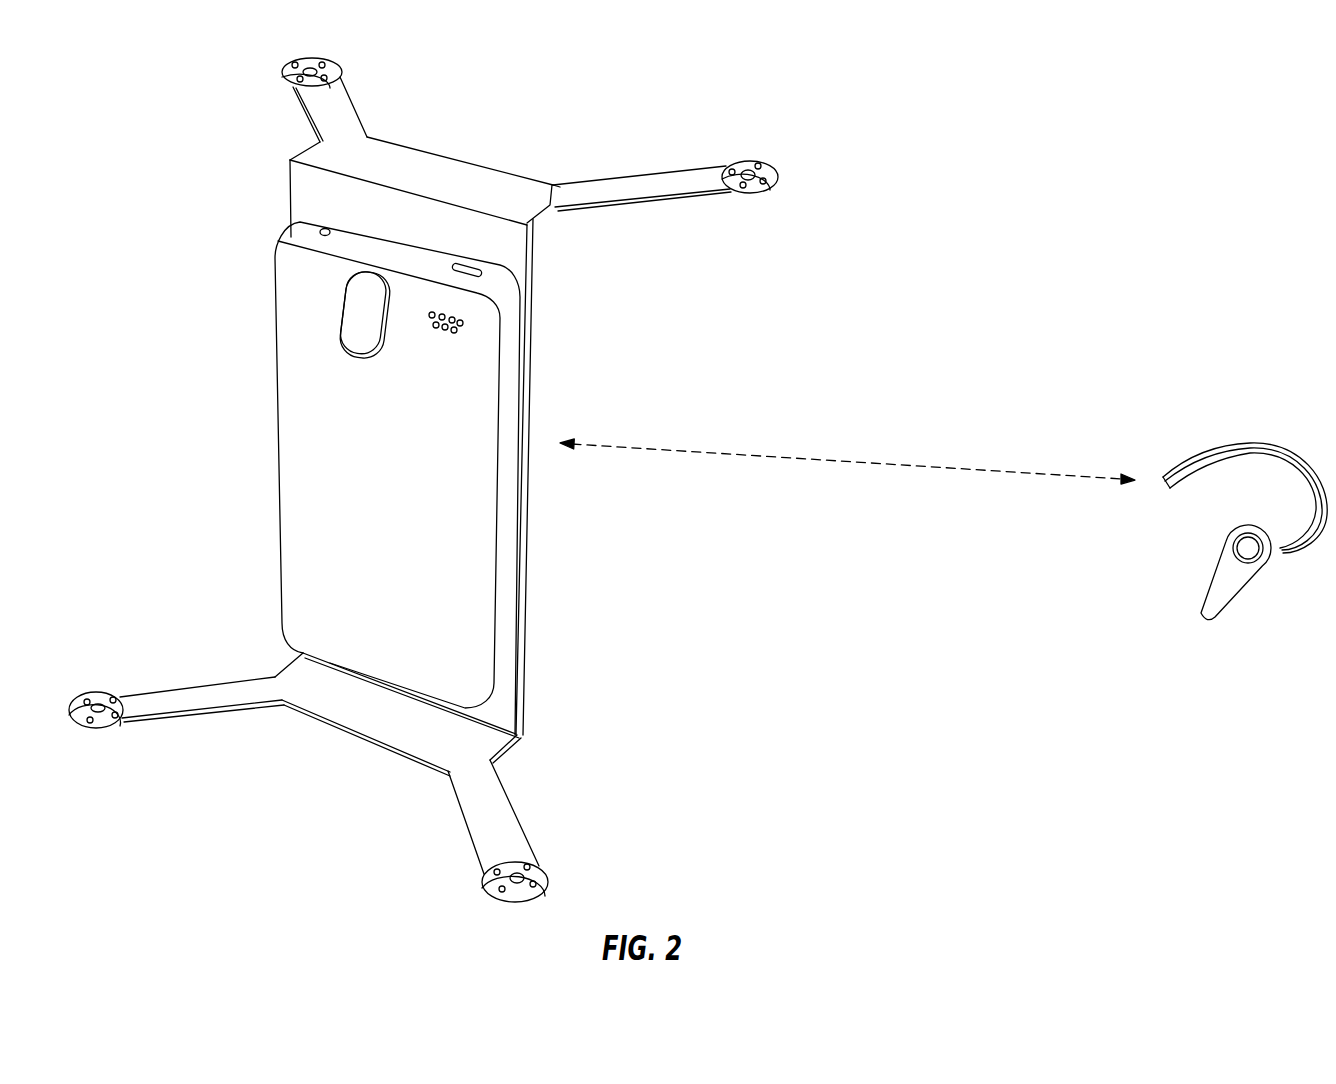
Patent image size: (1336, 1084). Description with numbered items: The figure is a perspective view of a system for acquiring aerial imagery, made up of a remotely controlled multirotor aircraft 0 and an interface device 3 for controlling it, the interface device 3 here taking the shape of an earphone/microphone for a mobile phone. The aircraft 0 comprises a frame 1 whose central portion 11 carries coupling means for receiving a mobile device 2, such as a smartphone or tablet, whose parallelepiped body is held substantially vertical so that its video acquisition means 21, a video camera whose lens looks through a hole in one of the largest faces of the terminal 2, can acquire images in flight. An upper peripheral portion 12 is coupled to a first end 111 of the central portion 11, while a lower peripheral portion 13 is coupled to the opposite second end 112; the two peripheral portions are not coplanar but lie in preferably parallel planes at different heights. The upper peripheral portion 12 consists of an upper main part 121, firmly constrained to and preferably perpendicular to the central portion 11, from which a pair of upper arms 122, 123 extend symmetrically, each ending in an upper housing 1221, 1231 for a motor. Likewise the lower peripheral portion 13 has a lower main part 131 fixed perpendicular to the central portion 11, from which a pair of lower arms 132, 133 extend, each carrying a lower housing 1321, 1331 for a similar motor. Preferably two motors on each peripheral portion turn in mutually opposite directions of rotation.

The remotely controlled aircraft 0 is at (832, 74).
The frame 1 is at (235, 156).
The central portion 11 is at (290, 192).
The first end 111 is at (513, 228).
The second end 112 is at (507, 713).
The upper peripheral portion 12 is at (455, 162).
The upper main part 121 is at (527, 193).
The upper arm 122 is at (708, 182).
The upper housing 1221 is at (780, 172).
The upper arm 123 is at (330, 102).
The upper housing 1231 is at (287, 72).
The lower peripheral portion 13 is at (318, 718).
The lower main part 131 is at (373, 713).
The lower arm 132 is at (497, 807).
The lower housing 1321 is at (547, 873).
The lower arm 133 is at (197, 693).
The lower housing 1331 is at (103, 722).
The mobile device 2 is at (302, 387).
The video acquisition means 21 is at (357, 308).
The interface device 3 is at (1265, 442).